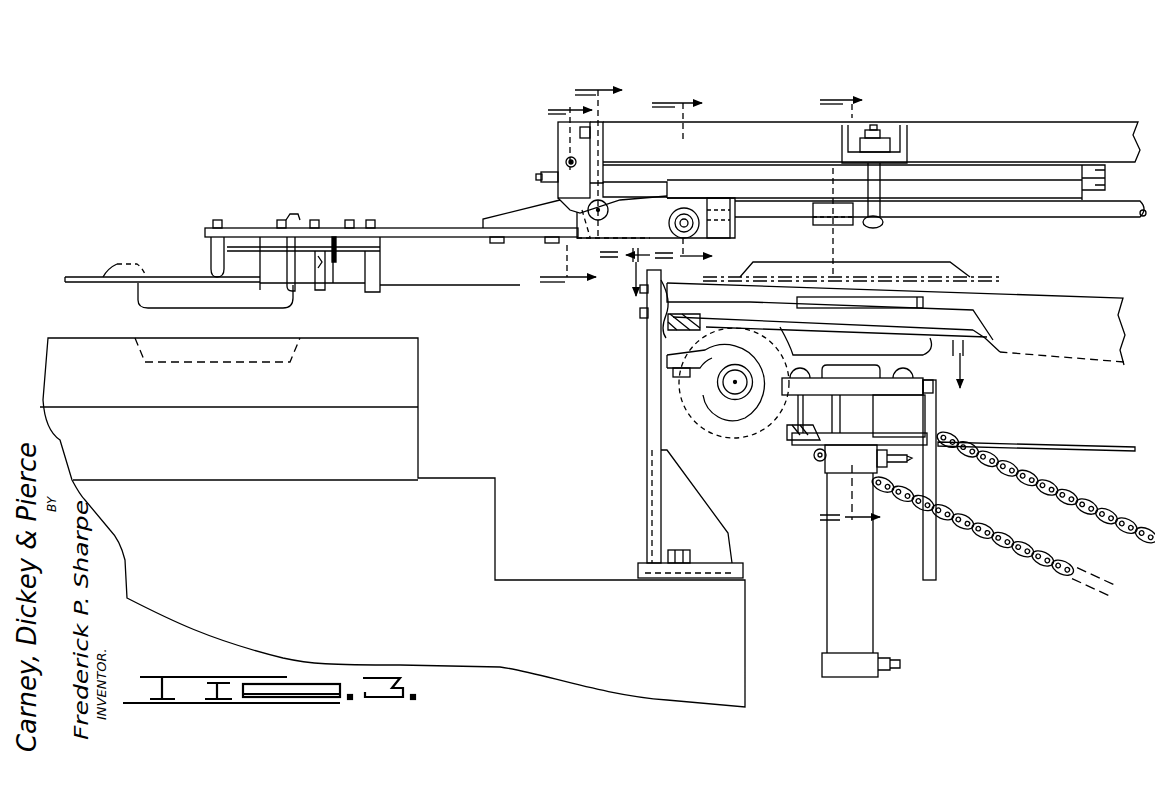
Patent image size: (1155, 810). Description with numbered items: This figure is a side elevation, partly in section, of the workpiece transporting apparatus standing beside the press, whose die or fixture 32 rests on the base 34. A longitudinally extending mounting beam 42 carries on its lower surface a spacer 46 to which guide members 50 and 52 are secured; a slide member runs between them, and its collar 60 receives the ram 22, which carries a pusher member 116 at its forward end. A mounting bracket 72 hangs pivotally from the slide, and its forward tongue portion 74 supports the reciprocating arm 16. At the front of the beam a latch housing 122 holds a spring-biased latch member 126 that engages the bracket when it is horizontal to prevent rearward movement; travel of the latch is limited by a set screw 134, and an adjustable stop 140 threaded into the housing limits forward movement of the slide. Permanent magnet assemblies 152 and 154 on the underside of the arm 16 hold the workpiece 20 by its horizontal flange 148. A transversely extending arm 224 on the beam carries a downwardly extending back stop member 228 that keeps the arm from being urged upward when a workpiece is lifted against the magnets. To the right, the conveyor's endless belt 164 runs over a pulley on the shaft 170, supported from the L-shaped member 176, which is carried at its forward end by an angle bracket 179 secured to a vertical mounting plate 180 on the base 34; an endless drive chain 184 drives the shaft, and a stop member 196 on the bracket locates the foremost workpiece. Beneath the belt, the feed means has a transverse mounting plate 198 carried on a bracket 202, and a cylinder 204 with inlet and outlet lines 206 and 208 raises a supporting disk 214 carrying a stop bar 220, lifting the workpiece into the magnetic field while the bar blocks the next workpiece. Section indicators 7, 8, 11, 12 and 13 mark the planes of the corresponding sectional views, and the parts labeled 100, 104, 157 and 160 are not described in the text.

The horizontal flange 148 is at (87, 278).
The workpiece 20 is at (148, 240).
The hanger bracket 160 is at (211, 246).
The screw 157 is at (292, 216).
The reciprocating arm 16 is at (428, 222).
The permanent magnet assembly 152 is at (395, 264).
The permanent magnet assembly 154 is at (306, 268).
The die or fixture 32 is at (418, 372).
The base 34 is at (508, 585).
The latch housing 122 is at (557, 130).
The set screw 134 is at (566, 160).
The adjustable stop 140 is at (541, 177).
The latch member 126 is at (565, 205).
The tongue portion 74 is at (505, 222).
The mounting bracket 72 is at (640, 187).
The guide member 52 is at (620, 205).
The section line 13-13 / pivot 13 is at (609, 151).
The vertically upstanding frame member 12 is at (585, 108).
The section line 7- 7 is at (666, 184).
The section line 11- 11 is at (866, 316).
The section line 8- 8 is at (796, 320).
The pusher member 116 is at (735, 226).
The transversely extending arm 224 is at (843, 155).
The mounting beam 42 is at (945, 128).
The bar 100 is at (960, 175).
The spacer 46 is at (1093, 163).
The guide member 50 is at (1108, 178).
The ram 22 is at (1105, 214).
The bar 104 is at (1020, 192).
The back stop member 228 is at (882, 210).
The collar 60 is at (853, 225).
The L-shaped member 176 is at (1092, 298).
The angle bracket 179 is at (661, 302).
The stop member 196 is at (668, 322).
The mounting plate 180 is at (648, 397).
The shaft 170 is at (735, 383).
The mounting plate 198 is at (783, 447).
The bracket 202 is at (830, 428).
The supporting disk 214 is at (850, 383).
The endless belt 164 is at (1085, 408).
The outlet line 208 is at (900, 465).
The endless drive chain 184 is at (1068, 515).
The stop bar 220 is at (938, 573).
The cylinder 204 is at (855, 620).
The inlet line 206 is at (895, 672).